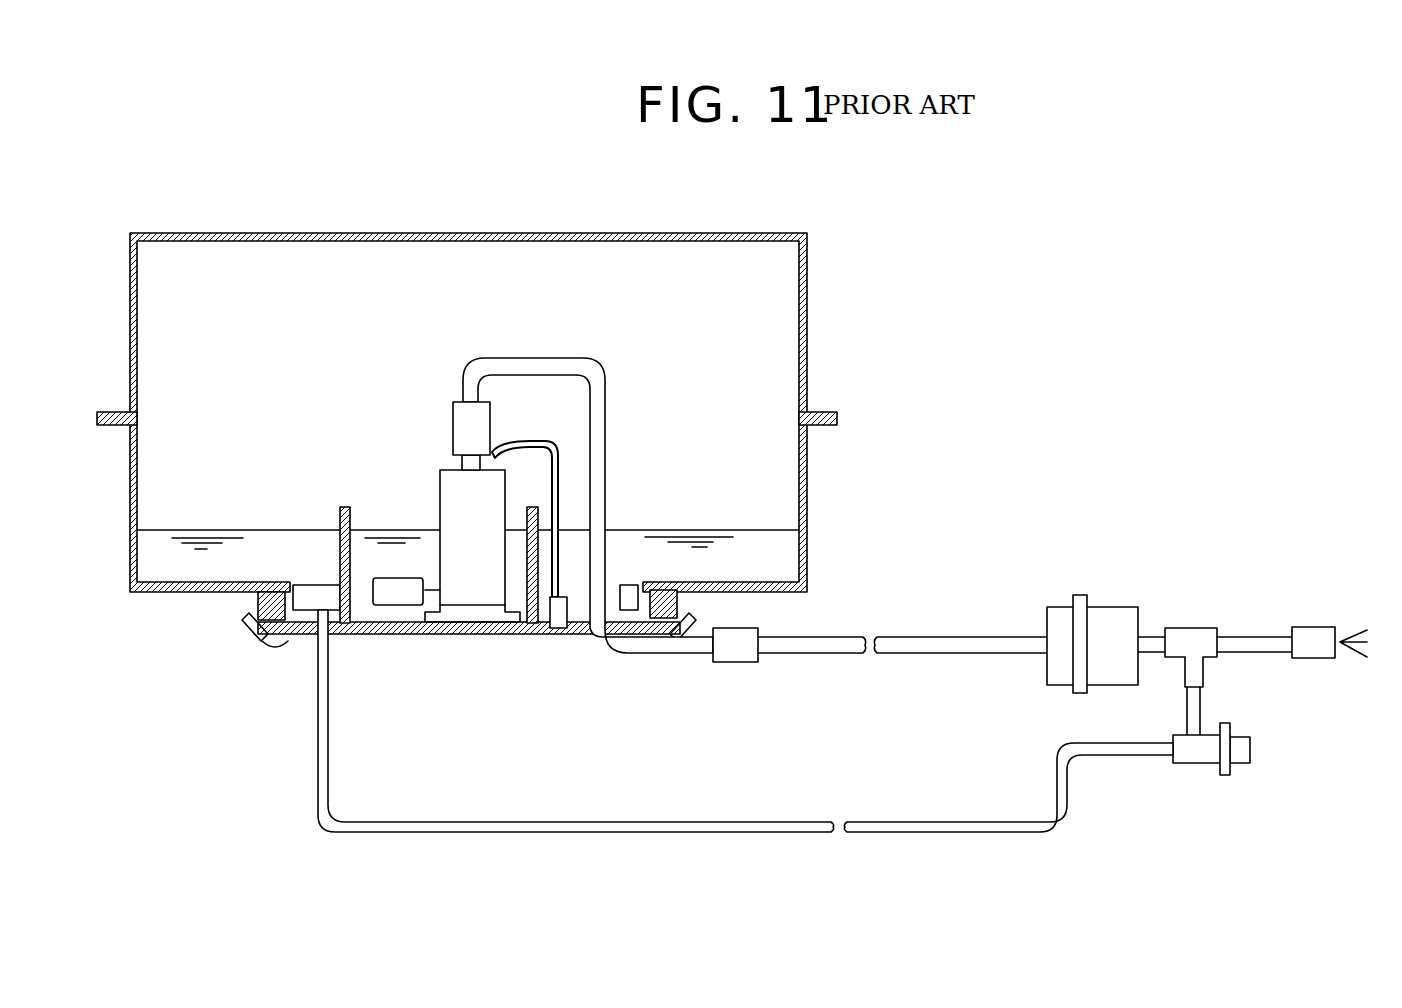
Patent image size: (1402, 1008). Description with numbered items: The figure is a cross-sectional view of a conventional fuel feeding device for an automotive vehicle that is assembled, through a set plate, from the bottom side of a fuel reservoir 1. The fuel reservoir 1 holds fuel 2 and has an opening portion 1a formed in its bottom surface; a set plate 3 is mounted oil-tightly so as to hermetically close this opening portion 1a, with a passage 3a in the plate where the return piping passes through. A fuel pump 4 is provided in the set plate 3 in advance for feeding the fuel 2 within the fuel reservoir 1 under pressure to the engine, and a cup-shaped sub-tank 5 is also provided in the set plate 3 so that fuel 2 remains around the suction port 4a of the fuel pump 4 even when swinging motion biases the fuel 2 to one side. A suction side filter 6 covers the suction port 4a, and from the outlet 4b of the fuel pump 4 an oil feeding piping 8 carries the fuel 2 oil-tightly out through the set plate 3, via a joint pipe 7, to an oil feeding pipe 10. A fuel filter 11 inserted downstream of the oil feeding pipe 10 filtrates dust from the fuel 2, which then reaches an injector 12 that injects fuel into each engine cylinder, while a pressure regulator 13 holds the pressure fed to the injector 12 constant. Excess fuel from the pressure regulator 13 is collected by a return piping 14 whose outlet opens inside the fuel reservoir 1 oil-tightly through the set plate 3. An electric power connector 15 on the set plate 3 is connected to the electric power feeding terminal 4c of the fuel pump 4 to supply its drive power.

The fuel reservoir 1 is at (808, 287).
The opening portion 1a is at (620, 610).
The fuel 2 is at (700, 530).
The set plate 3 is at (356, 636).
The grommet / pipe passage 3a is at (330, 610).
The fuel pump 4 is at (453, 493).
The suction port 4a is at (428, 582).
The outlet 4b is at (460, 460).
The electric power feeding terminal 4c is at (493, 450).
The sub-tank 5 is at (340, 513).
The suction side filter 6 is at (399, 606).
The joint pipe 7 is at (453, 418).
The oil feeding piping 8 is at (463, 375).
The oil feeding pipe 10 is at (832, 648).
The fuel filter 11 is at (1105, 618).
The injector 12 is at (1312, 627).
The pressure regulator 13 is at (1195, 765).
The return piping 14 is at (660, 833).
The electric power connector 15 is at (562, 630).